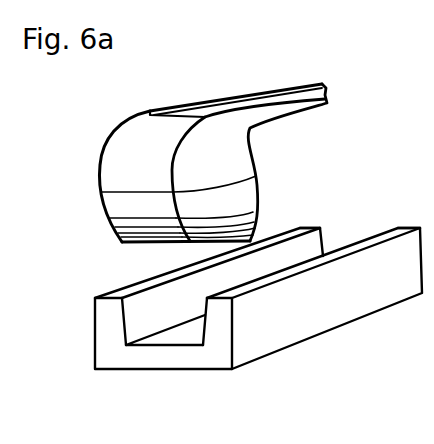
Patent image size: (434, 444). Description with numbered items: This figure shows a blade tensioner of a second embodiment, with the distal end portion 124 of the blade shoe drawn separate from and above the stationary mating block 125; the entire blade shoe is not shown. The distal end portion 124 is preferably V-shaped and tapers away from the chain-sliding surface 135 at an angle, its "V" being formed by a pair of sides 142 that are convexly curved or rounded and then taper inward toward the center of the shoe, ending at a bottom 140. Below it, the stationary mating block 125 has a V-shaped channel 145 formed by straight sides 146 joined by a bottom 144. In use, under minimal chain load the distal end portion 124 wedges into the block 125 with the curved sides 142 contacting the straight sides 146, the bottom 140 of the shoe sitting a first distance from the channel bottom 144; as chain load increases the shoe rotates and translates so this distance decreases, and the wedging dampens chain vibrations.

The distal end portion of the blade shoe 124 is at (94, 247).
The chain-sliding surface 135 is at (198, 114).
The convexly curved or rounded sides 142 is at (227, 197).
The bottom of the distal end portion 140 is at (158, 244).
The stationary mating block 125 is at (302, 317).
The straight sides 146 is at (207, 315).
The bottom of the V-shaped channel 144 is at (167, 345).
The V-shaped channel 145 is at (323, 225).